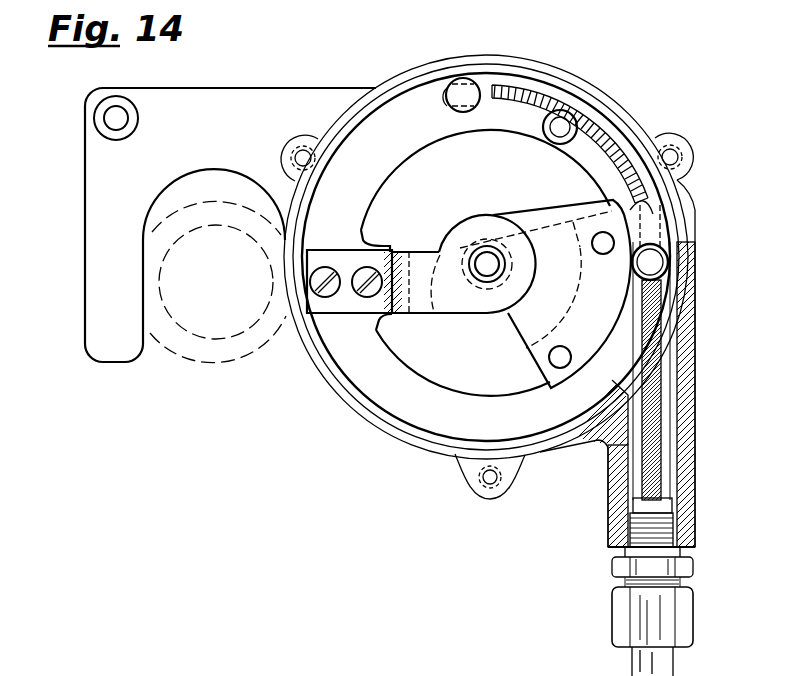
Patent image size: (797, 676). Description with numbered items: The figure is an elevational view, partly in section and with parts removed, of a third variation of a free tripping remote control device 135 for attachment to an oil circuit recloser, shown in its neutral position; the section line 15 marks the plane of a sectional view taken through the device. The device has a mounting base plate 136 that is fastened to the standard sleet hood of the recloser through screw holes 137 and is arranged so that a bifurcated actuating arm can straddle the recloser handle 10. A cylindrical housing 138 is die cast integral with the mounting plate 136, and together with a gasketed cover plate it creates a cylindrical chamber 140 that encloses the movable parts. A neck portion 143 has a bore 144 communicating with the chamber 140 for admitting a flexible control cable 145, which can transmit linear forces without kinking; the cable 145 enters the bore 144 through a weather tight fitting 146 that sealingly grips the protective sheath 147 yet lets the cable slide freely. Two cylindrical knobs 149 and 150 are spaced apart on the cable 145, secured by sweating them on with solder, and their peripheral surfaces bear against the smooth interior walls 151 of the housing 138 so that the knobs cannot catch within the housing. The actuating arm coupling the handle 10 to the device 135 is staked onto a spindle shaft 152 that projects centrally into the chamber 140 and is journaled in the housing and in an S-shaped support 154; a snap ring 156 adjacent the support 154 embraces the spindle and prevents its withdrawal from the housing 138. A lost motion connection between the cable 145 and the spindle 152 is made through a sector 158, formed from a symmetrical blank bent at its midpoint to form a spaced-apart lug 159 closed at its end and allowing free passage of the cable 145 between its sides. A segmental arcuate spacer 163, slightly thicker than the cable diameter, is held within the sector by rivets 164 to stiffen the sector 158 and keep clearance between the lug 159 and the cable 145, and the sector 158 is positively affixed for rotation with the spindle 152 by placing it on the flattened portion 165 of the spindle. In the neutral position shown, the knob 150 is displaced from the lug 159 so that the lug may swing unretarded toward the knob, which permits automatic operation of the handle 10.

The recloser handle 10 is at (197, 365).
The section line 15 is at (52, 278).
The free tripping remote control device 135 is at (640, 120).
The mounting base plate 136 is at (265, 112).
The screw holes 137 is at (100, 117).
The cylindrical housing 138 is at (322, 378).
The cylindrical chamber 140 is at (382, 390).
The neck portion 143 is at (690, 413).
The bore 144 is at (670, 453).
The flexible control cable 145 is at (650, 467).
The weather tight fitting 146 is at (682, 607).
The protective sheath 147 is at (667, 503).
The cylindrical knob 149 is at (643, 260).
The cylindrical knob 150 is at (462, 97).
The smooth interior walls 151 is at (526, 88).
The spindle shaft 152 is at (477, 258).
The S-shaped support 154 is at (430, 315).
The snap ring 156 is at (465, 273).
The sector 158 is at (532, 315).
The lug 159 is at (647, 218).
The segmental arcuate spacer 163 is at (532, 365).
The rivets 164 is at (591, 242).
The flattened portion 165 is at (522, 226).